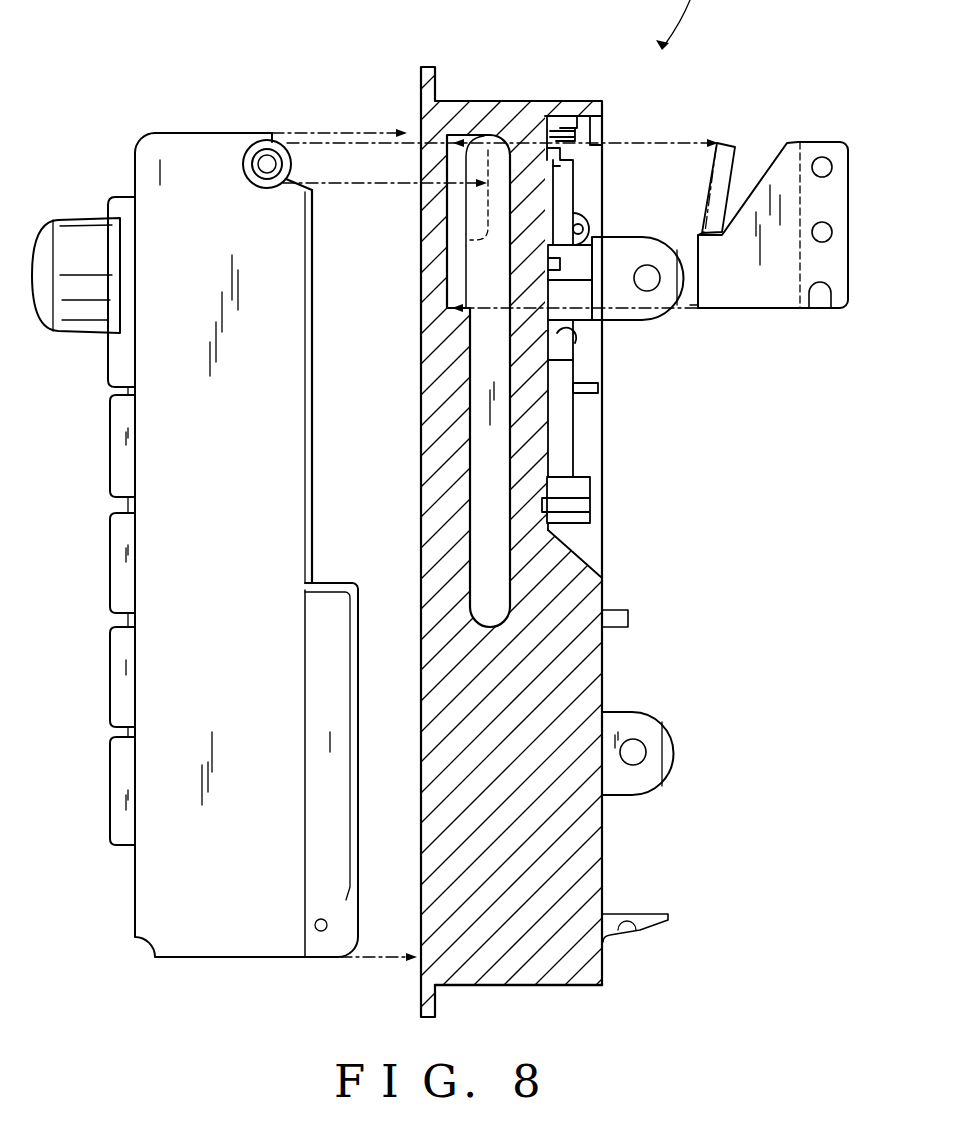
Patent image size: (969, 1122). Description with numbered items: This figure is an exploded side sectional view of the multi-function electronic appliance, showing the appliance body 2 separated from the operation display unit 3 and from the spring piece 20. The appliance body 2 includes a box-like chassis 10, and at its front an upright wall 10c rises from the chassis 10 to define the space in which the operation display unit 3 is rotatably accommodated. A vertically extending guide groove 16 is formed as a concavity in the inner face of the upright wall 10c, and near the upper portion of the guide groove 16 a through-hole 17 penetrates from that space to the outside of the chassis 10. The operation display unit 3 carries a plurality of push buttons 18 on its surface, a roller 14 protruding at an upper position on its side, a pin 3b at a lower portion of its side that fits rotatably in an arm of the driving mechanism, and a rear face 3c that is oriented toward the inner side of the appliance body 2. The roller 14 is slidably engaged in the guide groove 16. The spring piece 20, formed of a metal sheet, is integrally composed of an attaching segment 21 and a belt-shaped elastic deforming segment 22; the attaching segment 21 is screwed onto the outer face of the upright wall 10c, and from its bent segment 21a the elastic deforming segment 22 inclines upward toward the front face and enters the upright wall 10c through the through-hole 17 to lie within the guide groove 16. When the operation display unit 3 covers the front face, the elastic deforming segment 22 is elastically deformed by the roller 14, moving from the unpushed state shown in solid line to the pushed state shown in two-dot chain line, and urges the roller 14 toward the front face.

The appliance body 2 is at (553, 102).
The operation display unit 3 is at (190, 130).
The pin 3b is at (316, 925).
The rear face 3c is at (312, 357).
The chassis 10 is at (604, 117).
The upright wall 10c is at (522, 922).
The roller 14 is at (270, 184).
The guide groove 16 is at (510, 553).
The through-hole 17 is at (442, 282).
The push button 18 is at (118, 555).
The spring piece 20 is at (807, 140).
The attaching segment 21 is at (760, 290).
The bent segment 21a is at (683, 308).
The elastic deforming segment 22 is at (716, 142).